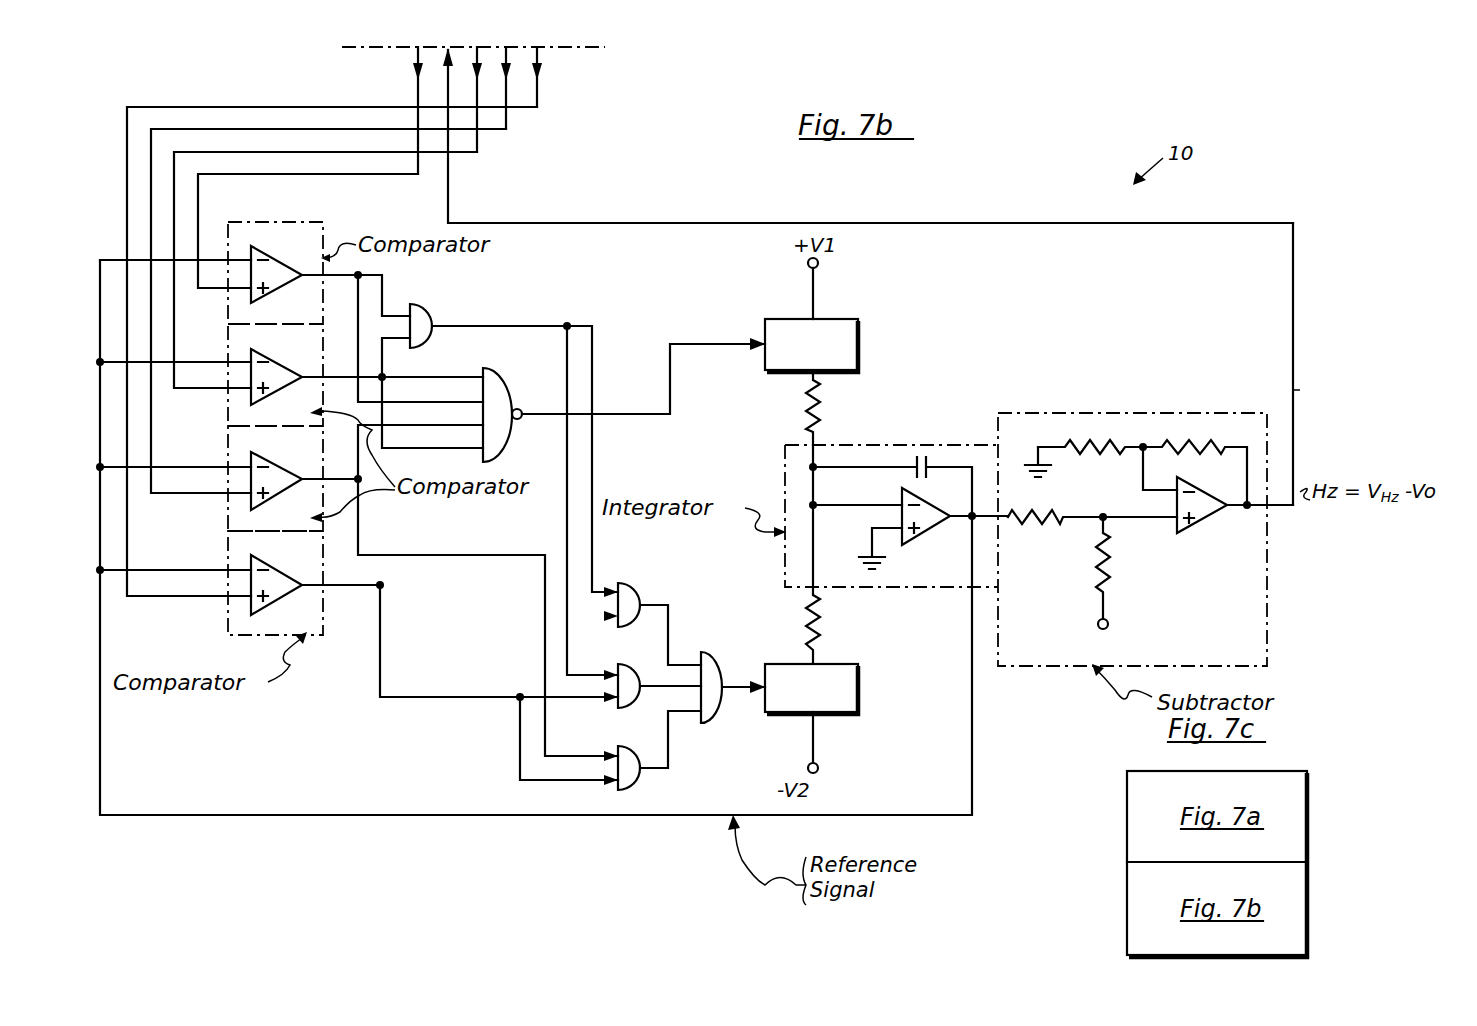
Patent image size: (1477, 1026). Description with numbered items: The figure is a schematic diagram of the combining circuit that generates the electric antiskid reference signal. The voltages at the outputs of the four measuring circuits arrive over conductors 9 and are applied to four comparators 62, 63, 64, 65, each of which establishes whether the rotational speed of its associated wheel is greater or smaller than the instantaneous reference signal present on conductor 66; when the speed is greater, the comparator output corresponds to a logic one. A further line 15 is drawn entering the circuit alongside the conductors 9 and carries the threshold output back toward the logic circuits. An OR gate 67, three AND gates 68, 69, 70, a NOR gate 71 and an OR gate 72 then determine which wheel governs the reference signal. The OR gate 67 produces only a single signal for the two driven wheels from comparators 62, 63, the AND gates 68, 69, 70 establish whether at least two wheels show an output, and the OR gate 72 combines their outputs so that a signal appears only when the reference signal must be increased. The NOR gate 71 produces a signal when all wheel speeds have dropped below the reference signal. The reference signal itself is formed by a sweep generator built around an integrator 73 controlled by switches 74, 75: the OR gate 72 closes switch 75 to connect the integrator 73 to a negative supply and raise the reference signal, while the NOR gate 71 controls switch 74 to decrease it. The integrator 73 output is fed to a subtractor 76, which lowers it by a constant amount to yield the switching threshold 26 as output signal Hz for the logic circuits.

In FIG. 7B, the conductors 9 is at (418, 52).
In FIG. 7B, the input line 15 is at (448, 87).
In FIG. 7B, the comparator 62 is at (228, 310).
In FIG. 7B, the comparator 63 is at (228, 407).
In FIG. 7B, the comparator 64 is at (228, 519).
In FIG. 7B, the comparator 65 is at (228, 625).
In FIG. 7B, the conductor 66 is at (352, 815).
In FIG. 7B, the OR gate 67 is at (427, 318).
In FIG. 7B, the AND gate 68 is at (636, 588).
In FIG. 7B, the AND gate 69 is at (633, 670).
In FIG. 7B, the AND gate 70 is at (645, 746).
In FIG. 7B, the NOR gate 71 is at (500, 390).
In FIG. 7B, the OR gate 72 is at (712, 660).
In FIG. 7B, the integrator 73 is at (906, 443).
In FIG. 7B, the switch 74 is at (860, 345).
In FIG. 7B, the switch 75 is at (860, 688).
In FIG. 7C, the subtractor 76 is at (1267, 595).
In FIG. 7B, the switching threshold 26 is at (1470, 352).